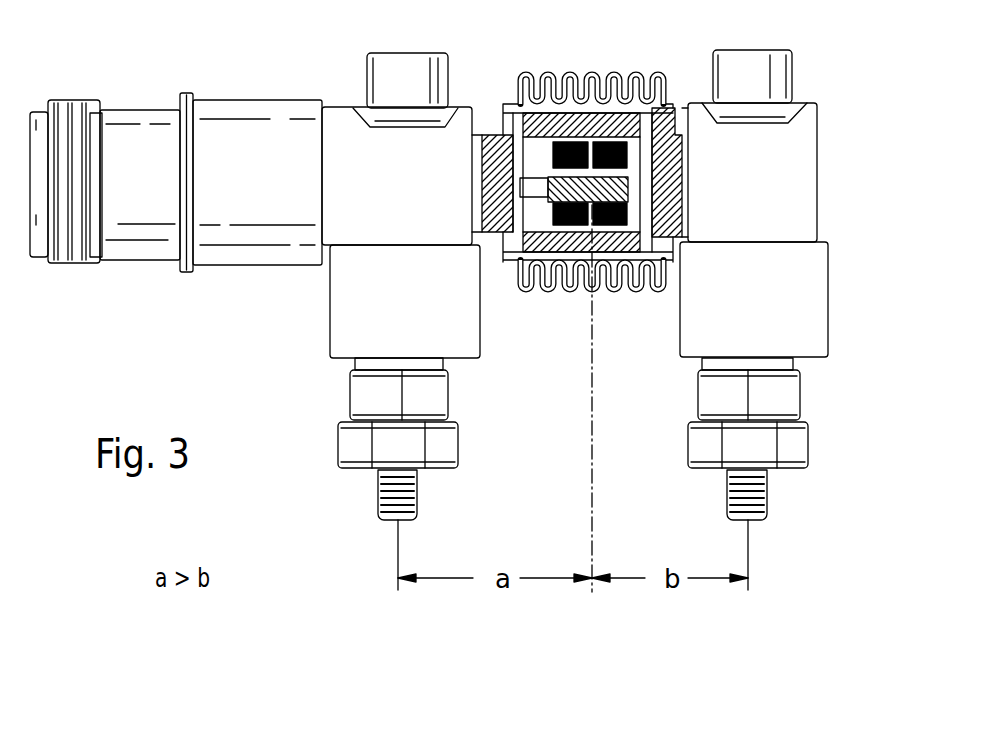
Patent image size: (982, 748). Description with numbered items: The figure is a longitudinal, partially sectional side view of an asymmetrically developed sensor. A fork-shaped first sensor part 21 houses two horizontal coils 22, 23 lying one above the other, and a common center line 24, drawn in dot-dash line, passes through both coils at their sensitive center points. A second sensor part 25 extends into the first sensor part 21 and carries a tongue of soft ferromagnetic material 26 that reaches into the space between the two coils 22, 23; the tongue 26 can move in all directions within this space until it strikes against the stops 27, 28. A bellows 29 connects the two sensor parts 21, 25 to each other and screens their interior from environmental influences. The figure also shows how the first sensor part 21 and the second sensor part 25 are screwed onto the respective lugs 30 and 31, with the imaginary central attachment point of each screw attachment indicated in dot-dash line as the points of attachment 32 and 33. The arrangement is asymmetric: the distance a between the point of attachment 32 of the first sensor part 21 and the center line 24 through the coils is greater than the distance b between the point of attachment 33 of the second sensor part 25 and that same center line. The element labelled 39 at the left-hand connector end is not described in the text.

The first sensor part 21 is at (497, 143).
The coil 22 is at (591, 200).
The coil 23 is at (558, 268).
The center line 24 is at (592, 418).
The second sensor part 25 is at (657, 115).
The tongue of soft ferromagnetic material 26 is at (637, 273).
The stop 27 is at (528, 126).
The stop 28 is at (516, 282).
The bellows 29 is at (600, 270).
The lug 30 is at (347, 320).
The lug 31 is at (815, 333).
The point of attachment 32 is at (398, 551).
The point of attachment 33 is at (748, 550).
The plug connector 39 is at (149, 250).